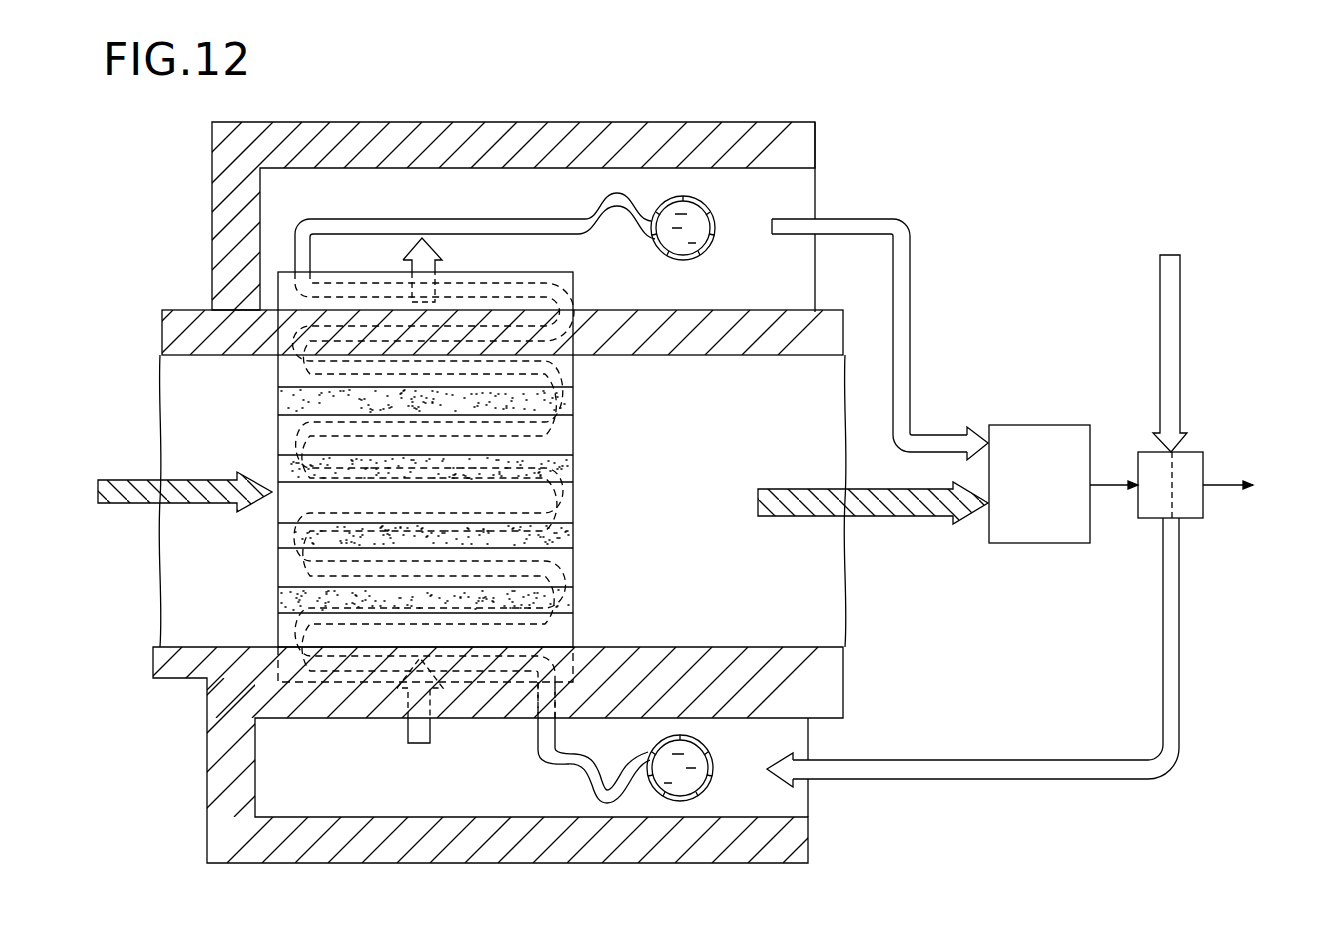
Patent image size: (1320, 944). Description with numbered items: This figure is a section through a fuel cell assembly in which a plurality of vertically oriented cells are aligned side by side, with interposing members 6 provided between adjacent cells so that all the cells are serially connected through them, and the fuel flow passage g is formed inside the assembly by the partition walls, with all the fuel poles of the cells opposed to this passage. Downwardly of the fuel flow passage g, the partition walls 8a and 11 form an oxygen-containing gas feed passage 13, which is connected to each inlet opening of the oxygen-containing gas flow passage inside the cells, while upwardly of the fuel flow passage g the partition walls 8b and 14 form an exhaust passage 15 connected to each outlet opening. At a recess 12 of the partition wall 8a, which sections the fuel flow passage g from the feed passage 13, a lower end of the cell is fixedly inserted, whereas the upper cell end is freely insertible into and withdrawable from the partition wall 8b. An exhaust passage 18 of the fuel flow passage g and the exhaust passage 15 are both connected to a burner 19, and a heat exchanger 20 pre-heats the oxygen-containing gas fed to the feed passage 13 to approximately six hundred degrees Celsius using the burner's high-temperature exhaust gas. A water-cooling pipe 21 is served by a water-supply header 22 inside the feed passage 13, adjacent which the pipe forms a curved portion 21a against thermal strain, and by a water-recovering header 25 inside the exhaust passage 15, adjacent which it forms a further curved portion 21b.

The interposing member 6 is at (278, 462).
The fuel flow passage g is at (548, 373).
The partition wall 8a is at (687, 650).
The partition wall 8b is at (728, 358).
The partition wall 11 is at (457, 863).
The recess 12 is at (575, 638).
The oxygen-containing gas feed passage 13 is at (602, 737).
The partition wall 14 is at (520, 133).
The exhaust passage 15 is at (701, 217).
The exhaust passage 18 is at (829, 503).
The burner 19 is at (1043, 425).
The heat exchanger 20 is at (1197, 452).
The water-cooling pipe 21 is at (572, 447).
The curved portion 21a is at (607, 803).
The curved portion 21b is at (620, 195).
The water-supply header 22 is at (710, 780).
The water-recovering header 25 is at (703, 250).